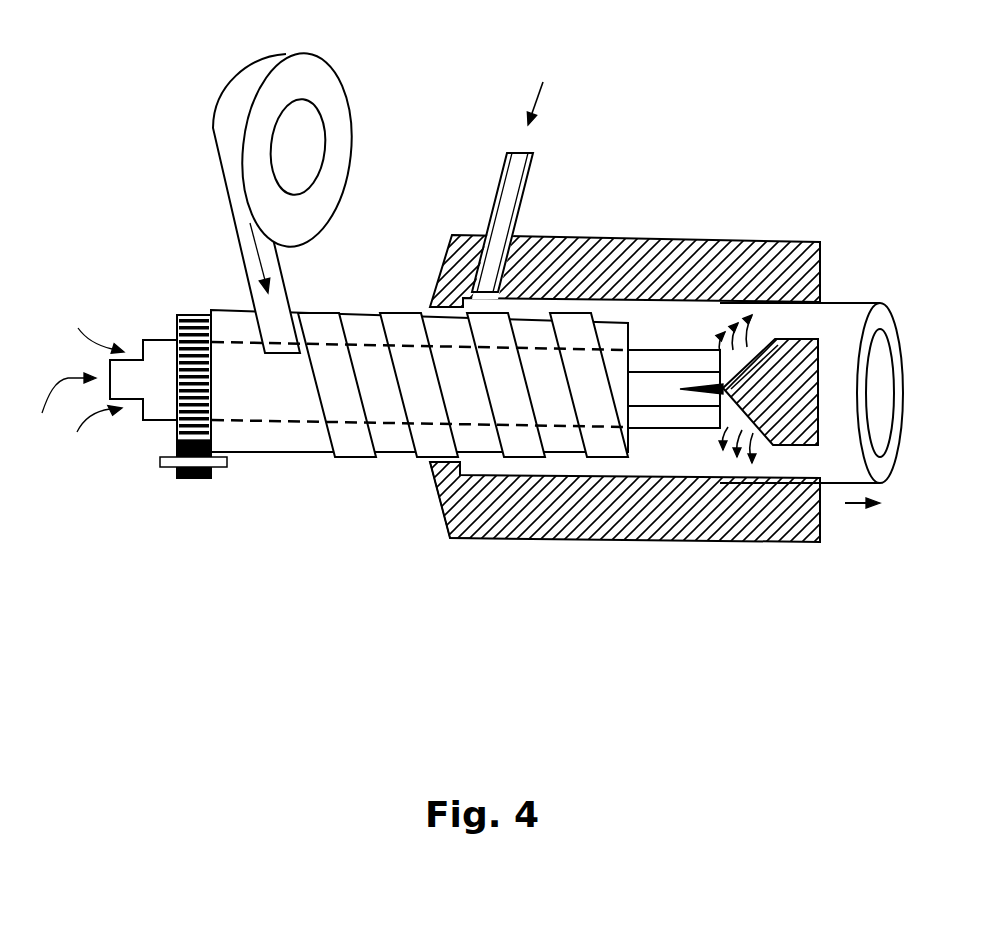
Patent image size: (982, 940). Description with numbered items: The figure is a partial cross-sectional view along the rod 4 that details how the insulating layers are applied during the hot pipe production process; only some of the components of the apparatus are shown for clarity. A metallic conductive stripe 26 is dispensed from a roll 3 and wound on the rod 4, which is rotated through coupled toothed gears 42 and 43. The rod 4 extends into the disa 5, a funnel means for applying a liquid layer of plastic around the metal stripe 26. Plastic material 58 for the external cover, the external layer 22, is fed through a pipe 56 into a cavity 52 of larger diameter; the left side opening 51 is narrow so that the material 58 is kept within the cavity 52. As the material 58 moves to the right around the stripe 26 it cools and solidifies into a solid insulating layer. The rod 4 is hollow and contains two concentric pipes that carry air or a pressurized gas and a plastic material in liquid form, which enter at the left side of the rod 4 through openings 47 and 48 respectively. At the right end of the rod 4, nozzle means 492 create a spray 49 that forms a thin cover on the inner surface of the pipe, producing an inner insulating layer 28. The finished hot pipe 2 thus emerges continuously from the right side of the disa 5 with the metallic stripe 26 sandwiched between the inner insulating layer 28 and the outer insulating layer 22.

The hot pipe 2 is at (848, 322).
The roll 3 is at (291, 65).
The rod 4 is at (303, 440).
The disa 5 is at (517, 530).
The external layer 22 is at (578, 301).
The stripe 26 is at (282, 298).
The inner insulating layer 28 is at (776, 468).
The toothed gear 42 is at (198, 478).
The toothed gear 43 is at (190, 315).
The opening 47 is at (100, 393).
The opening 48 is at (93, 340).
The spray 49 is at (719, 334).
The left side opening 51 is at (432, 316).
The cavity 52 is at (485, 462).
The pipe 56 is at (527, 192).
The plastic material 58 is at (542, 100).
The nozzle means 492 is at (717, 403).